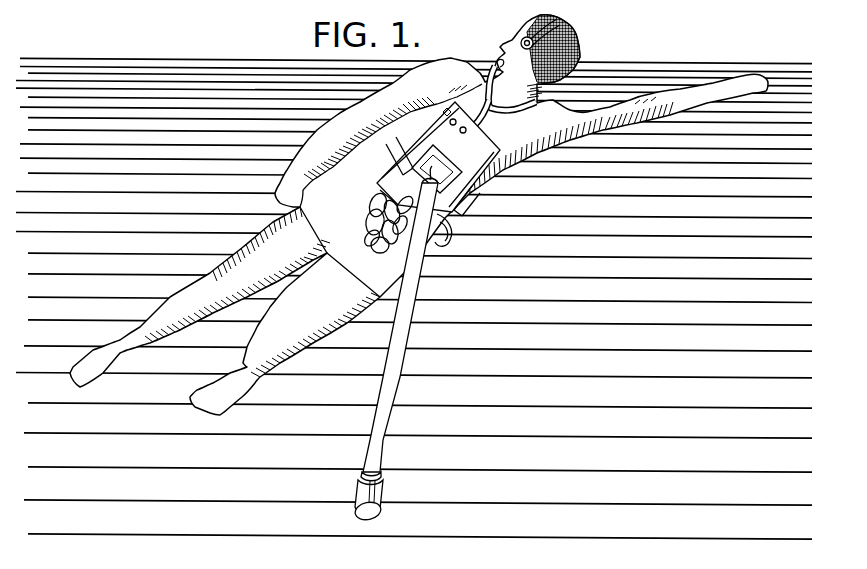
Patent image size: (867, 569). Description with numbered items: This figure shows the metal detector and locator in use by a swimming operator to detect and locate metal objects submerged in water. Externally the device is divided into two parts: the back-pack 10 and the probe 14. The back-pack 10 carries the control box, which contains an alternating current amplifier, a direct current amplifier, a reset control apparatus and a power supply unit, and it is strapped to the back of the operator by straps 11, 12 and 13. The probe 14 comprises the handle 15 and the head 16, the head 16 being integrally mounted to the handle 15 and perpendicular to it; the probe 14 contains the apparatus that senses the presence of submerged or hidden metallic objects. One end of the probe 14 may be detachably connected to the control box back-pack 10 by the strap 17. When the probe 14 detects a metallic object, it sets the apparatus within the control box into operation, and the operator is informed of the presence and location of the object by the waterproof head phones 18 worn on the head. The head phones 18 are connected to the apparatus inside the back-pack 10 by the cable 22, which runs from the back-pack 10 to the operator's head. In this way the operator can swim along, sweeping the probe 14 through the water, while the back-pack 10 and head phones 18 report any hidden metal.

The back-pack 10 is at (476, 160).
The strap 11 is at (538, 98).
The strap 12 is at (489, 66).
The strap 13 is at (393, 149).
The probe 14 is at (409, 345).
The handle 15 is at (381, 399).
The head 16 is at (384, 491).
The strap 17 is at (471, 197).
The waterproof head phones 18 is at (522, 40).
The cable 22 is at (446, 232).